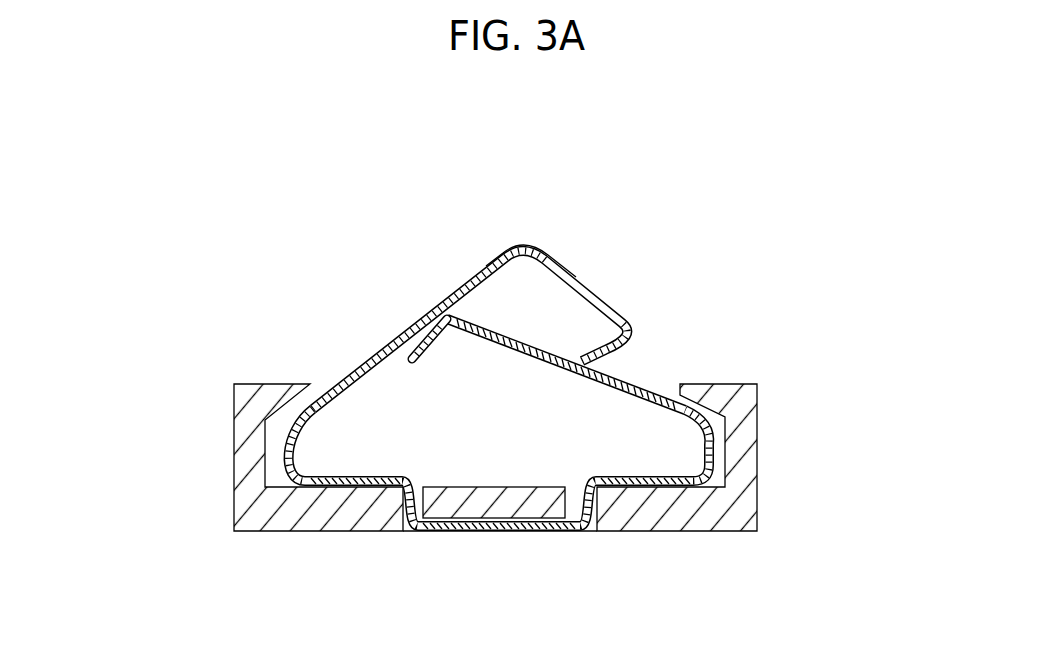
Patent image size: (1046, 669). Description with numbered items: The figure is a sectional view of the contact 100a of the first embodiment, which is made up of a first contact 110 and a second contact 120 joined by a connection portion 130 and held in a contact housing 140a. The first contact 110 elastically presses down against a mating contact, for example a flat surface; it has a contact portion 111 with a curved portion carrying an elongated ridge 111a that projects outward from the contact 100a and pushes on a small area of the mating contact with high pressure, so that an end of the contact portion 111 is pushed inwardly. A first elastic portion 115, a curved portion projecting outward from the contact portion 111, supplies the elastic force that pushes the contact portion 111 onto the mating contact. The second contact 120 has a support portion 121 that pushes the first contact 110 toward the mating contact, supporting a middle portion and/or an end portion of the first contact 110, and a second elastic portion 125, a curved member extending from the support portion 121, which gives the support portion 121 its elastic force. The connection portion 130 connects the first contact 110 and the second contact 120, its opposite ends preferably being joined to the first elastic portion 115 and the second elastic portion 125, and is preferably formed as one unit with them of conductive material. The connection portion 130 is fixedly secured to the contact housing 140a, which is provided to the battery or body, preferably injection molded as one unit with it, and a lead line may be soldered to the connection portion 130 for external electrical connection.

The contact 100a is at (765, 212).
The first contact 110 is at (346, 318).
The contact portion 111 is at (388, 280).
The elongated ridge 111a is at (527, 246).
The first elastic portion 115 is at (278, 453).
The second contact 120 is at (672, 391).
The support portion 121 is at (623, 385).
The second elastic portion 125 is at (716, 442).
The connection portion 130 is at (495, 532).
The contact housing 140a is at (667, 531).